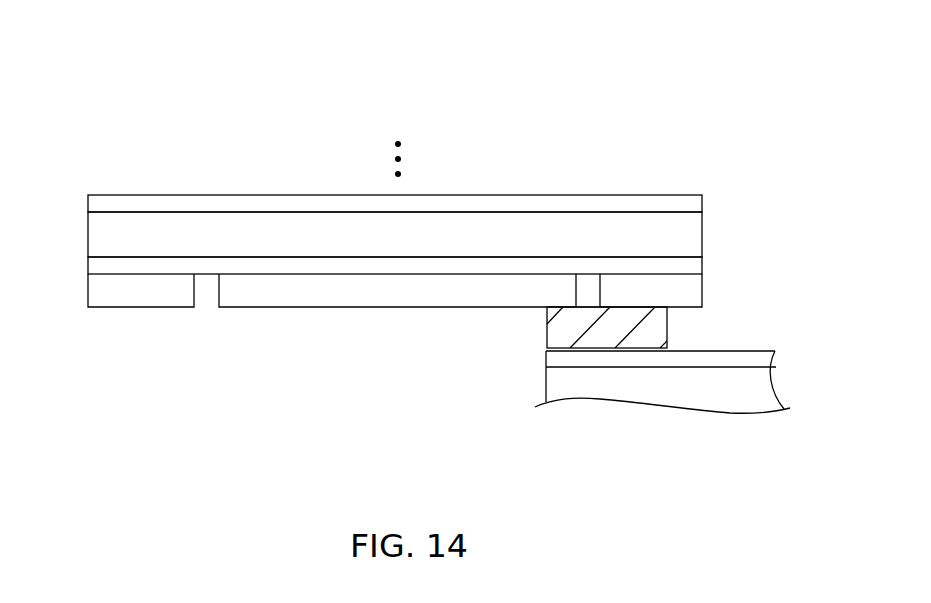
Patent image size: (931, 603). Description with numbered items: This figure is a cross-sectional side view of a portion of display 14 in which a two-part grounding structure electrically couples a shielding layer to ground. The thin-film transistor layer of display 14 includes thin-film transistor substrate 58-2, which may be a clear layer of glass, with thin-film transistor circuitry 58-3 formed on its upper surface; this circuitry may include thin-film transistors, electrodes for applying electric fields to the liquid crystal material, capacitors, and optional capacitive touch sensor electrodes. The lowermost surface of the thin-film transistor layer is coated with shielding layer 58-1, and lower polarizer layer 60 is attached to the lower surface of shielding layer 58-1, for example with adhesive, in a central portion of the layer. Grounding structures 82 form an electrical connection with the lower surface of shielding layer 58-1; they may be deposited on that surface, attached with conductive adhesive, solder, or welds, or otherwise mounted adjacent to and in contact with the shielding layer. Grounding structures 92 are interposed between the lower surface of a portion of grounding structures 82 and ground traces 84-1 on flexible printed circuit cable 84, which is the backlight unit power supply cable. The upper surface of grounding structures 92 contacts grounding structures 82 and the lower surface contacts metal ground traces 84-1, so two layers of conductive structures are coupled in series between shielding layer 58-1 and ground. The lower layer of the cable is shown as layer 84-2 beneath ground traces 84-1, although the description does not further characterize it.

The display 14 is at (443, 232).
The shielding layer 58-1 is at (696, 265).
The thin-film transistor substrate 58-2 is at (696, 234).
The thin-film transistor circuitry 58-3 is at (696, 203).
The grounding structures 82 is at (102, 289).
The lower polarizer layer 60 is at (263, 297).
The grounding structures 92 is at (553, 328).
The flexible printed circuit cable 84 is at (663, 369).
The ground traces 84-1 is at (743, 355).
The printed circuit substrate layer 84-2 is at (767, 388).